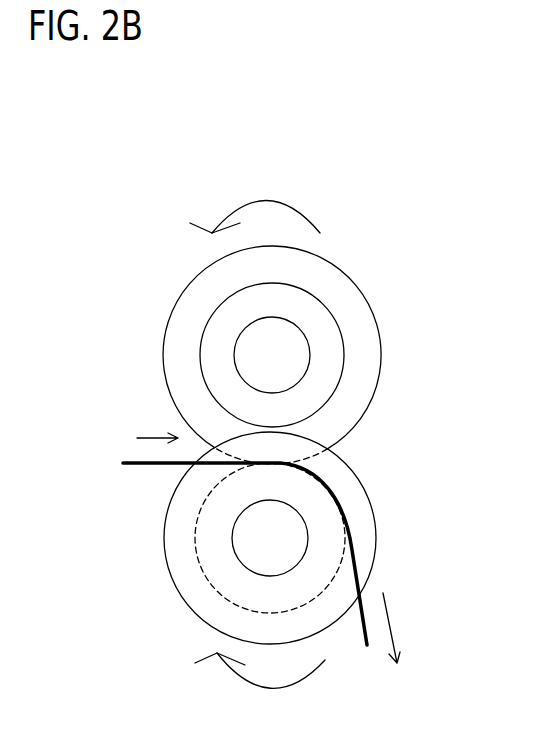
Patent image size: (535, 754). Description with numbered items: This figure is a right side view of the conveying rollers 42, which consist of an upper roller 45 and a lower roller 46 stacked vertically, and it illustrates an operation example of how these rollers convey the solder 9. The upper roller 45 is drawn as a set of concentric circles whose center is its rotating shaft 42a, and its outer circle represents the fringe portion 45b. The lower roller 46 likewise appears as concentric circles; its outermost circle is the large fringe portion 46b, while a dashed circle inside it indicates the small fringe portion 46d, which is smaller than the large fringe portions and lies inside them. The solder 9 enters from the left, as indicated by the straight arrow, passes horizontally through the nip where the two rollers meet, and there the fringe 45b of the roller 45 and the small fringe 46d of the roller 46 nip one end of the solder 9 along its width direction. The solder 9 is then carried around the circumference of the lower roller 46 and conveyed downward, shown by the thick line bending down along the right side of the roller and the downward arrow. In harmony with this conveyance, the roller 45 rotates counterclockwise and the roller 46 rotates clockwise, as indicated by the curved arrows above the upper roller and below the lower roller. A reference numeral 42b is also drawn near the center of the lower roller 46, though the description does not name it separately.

The conveying rollers 42 is at (182, 183).
The rotating shaft 42a is at (287, 358).
The core of pressure roller 42b is at (295, 535).
The roller 45 is at (267, 334).
The fringe portion 45b is at (167, 343).
The roller 46 is at (267, 583).
The large fringe portion 46b is at (169, 567).
The small fringe portion 46d is at (197, 521).
The solder 9 is at (133, 461).